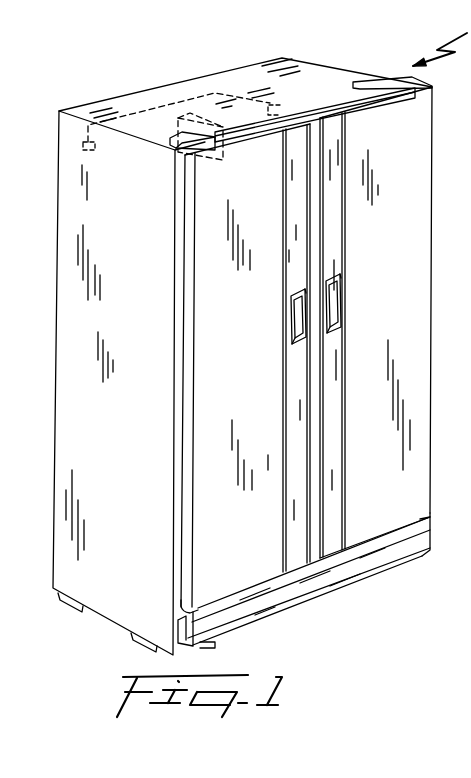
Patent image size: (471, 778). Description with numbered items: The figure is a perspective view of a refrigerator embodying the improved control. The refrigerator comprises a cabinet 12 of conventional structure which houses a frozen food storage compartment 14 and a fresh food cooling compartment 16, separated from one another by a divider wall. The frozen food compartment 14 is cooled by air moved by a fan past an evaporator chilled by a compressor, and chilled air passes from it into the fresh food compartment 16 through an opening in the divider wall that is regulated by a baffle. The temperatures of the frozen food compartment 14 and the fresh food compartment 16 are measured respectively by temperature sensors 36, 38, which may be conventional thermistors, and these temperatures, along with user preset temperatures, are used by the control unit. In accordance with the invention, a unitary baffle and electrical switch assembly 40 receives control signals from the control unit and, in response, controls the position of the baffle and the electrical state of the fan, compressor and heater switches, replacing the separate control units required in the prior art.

The cabinet 12 is at (123, 102).
The frozen food storage compartment 14 is at (249, 349).
The fresh food cooling compartment 16 is at (394, 337).
The temperature sensor 36 is at (89, 150).
The temperature sensor 38 is at (290, 100).
The unitary baffle and electrical switch assembly 40 is at (197, 116).